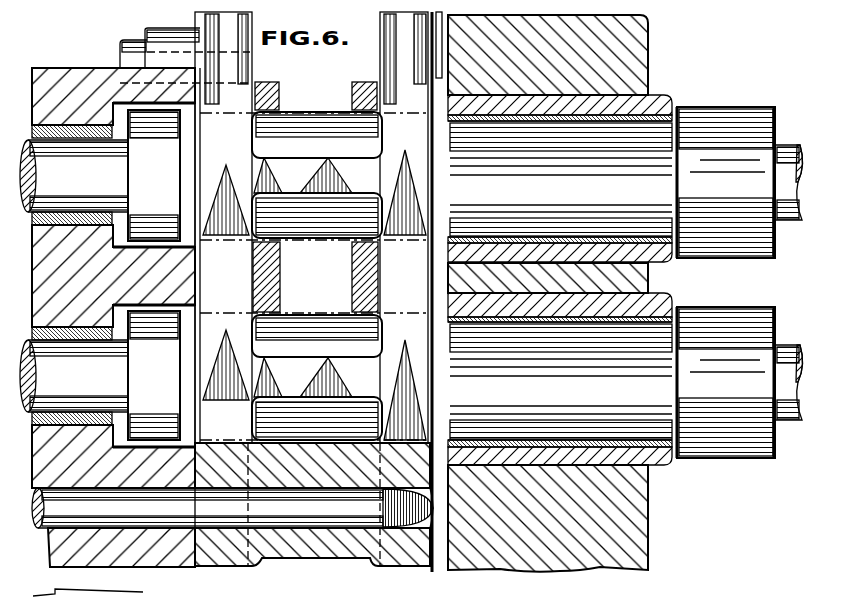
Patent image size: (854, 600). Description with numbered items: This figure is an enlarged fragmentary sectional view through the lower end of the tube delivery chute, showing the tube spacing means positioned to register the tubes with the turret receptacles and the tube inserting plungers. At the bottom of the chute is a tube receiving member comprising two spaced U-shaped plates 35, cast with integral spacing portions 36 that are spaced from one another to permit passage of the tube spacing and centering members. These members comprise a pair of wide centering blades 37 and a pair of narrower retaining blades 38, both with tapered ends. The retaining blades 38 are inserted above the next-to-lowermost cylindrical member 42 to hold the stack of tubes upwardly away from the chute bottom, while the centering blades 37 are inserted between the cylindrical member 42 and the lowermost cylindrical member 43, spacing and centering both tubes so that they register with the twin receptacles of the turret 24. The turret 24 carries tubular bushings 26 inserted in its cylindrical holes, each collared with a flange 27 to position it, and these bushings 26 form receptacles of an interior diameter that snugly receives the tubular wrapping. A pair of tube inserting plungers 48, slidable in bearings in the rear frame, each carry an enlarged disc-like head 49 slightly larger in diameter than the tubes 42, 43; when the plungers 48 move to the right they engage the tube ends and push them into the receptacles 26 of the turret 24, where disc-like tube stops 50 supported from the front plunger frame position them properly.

The turret 24 is at (645, 41).
The receptacle bushing 26 is at (590, 250).
The flange 27 is at (673, 105).
The U-shaped plate 35 is at (232, 562).
The spacing portion 36 is at (325, 140).
The centering blade 37 is at (355, 270).
The retaining blade 38 is at (356, 93).
The cylindrical member 42 is at (424, 242).
The lowermost cylindrical member 43 is at (419, 313).
The tube inserting plunger 48 is at (52, 160).
The plunger head 49 is at (155, 135).
The tube stop 50 is at (745, 128).